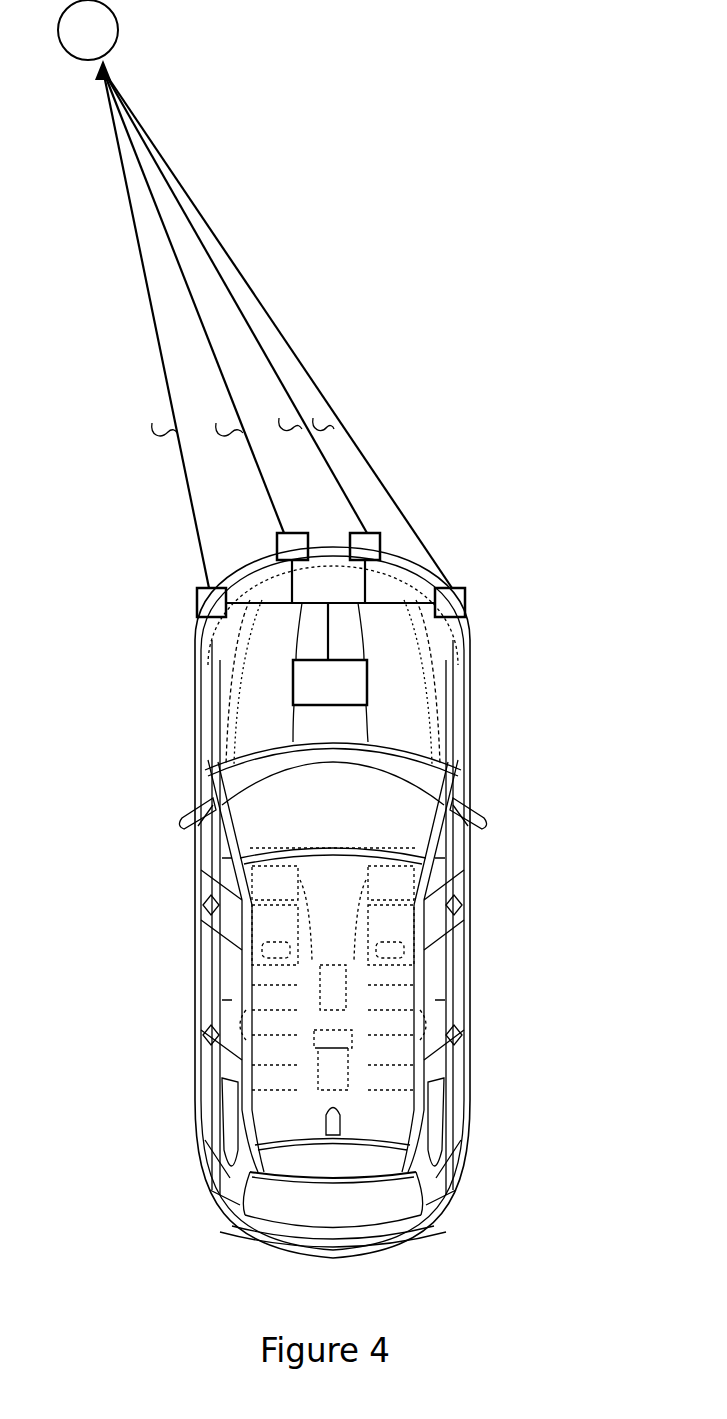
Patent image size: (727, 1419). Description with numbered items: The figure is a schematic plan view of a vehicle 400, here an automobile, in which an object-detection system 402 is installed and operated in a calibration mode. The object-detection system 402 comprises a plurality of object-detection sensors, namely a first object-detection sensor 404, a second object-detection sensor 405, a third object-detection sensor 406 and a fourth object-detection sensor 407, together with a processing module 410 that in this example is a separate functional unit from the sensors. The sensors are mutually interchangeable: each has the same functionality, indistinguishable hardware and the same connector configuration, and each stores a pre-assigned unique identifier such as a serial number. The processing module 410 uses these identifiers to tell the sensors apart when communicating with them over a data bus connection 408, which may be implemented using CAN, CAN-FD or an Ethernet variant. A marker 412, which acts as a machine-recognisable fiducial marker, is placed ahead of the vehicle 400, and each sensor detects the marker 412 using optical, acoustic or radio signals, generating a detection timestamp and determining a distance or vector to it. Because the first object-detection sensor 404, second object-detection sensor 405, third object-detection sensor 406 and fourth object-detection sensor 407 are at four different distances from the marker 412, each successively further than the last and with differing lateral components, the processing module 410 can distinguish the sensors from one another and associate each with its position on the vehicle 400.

The vehicle 400 is at (470, 692).
The object-detection system 402 is at (484, 598).
The first object-detection sensor 404 is at (197, 602).
The second object-detection sensor 405 is at (277, 548).
The third object-detection sensor 406 is at (350, 545).
The fourth object-detection sensor 407 is at (460, 588).
The data bus connection 408 is at (418, 565).
The processing module 410 is at (330, 654).
The marker 412 is at (120, 30).